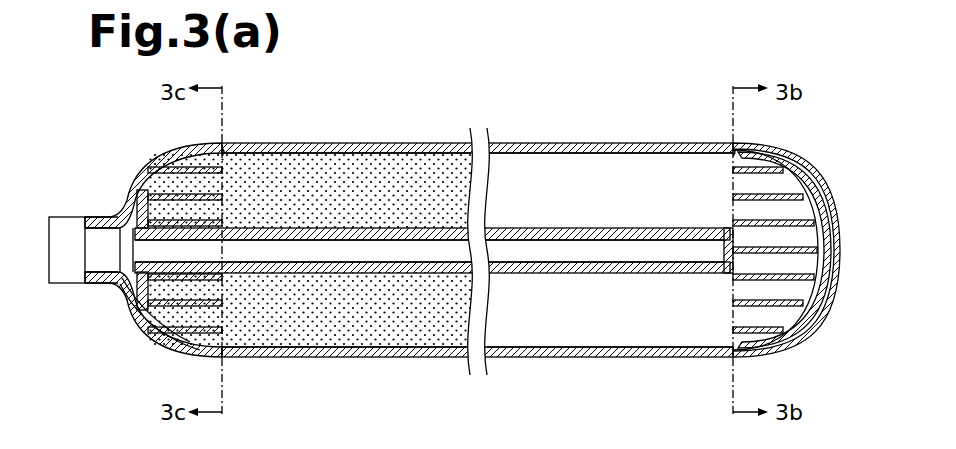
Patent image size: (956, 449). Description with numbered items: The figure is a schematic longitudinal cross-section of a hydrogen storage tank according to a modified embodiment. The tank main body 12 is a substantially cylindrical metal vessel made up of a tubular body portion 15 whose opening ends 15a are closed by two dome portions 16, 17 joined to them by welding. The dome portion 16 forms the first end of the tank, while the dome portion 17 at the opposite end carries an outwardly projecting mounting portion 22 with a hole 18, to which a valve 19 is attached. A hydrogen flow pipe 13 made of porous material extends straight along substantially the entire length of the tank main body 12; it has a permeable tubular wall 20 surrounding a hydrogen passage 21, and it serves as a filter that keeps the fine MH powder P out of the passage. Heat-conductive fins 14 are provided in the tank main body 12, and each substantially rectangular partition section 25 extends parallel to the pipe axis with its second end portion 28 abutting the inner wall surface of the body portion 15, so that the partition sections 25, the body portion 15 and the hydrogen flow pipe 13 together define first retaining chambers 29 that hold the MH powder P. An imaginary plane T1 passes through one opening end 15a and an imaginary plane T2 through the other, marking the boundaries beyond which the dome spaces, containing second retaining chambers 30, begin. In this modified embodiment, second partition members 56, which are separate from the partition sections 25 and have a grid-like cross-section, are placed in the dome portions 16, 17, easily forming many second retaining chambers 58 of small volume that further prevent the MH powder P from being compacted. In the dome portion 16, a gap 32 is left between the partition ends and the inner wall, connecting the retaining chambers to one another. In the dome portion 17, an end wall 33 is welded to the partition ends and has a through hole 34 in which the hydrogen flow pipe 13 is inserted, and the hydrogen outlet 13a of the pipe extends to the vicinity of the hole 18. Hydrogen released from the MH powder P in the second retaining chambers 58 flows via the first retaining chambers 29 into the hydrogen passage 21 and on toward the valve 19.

The tank main body 12 is at (517, 362).
The hydrogen flow pipe 13 is at (662, 282).
The hydrogen outlet 13a is at (127, 288).
The fins 14 is at (520, 146).
The body portion 15 is at (335, 147).
The opening ends 15a is at (224, 148).
The dome portion 16 is at (812, 172).
The dome portion 17 is at (158, 152).
The hole 18 is at (87, 268).
The valve 19 is at (62, 216).
The tubular wall 20 is at (626, 270).
The hydrogen passage 21 is at (564, 260).
The mounting portion 22 is at (100, 216).
The partition section 25 is at (562, 160).
The second end portion 28 is at (598, 152).
The first retaining chambers 29 is at (285, 155).
The second retaining chambers 30 is at (228, 172).
The gap 32 is at (827, 212).
The end wall 33 is at (140, 298).
The through hole 34 is at (141, 200).
The second partition members 56 is at (190, 196).
The second retaining chambers 58 is at (183, 332).
The MH powder P is at (408, 168).
The imaginary plane T1 is at (731, 380).
The imaginary plane T2 is at (226, 383).